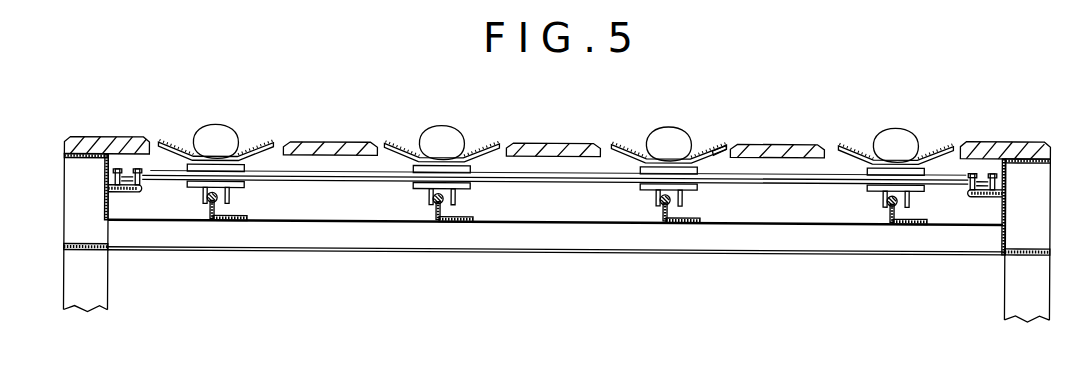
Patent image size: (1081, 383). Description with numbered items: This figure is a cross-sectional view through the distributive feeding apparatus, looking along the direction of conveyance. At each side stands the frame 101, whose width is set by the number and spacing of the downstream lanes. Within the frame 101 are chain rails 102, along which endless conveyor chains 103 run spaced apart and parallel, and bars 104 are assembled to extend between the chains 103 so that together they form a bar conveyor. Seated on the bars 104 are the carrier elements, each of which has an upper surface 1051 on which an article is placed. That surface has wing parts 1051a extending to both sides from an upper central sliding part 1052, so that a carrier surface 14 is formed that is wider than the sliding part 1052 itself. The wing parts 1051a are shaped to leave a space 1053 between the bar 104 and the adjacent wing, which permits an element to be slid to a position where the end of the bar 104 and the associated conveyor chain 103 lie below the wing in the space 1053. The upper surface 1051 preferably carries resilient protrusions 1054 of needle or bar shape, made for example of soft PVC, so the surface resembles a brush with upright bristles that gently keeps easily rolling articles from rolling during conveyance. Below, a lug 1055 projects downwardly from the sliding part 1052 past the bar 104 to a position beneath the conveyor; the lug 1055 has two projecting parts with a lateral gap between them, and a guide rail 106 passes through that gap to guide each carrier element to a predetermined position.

The carrier surface 14 is at (477, 146).
The frame 101 is at (84, 154).
The chain rails 102 is at (127, 192).
The conveyor chains 103 is at (131, 170).
The bars 104 is at (167, 182).
The guide rail 106 is at (435, 210).
The upper surface 1051 is at (693, 160).
The wing parts 1051a is at (722, 154).
The sliding part 1052 is at (462, 188).
The space 1053 is at (715, 163).
The resilient protrusions 1054 is at (648, 155).
The lug 1055 is at (425, 196).